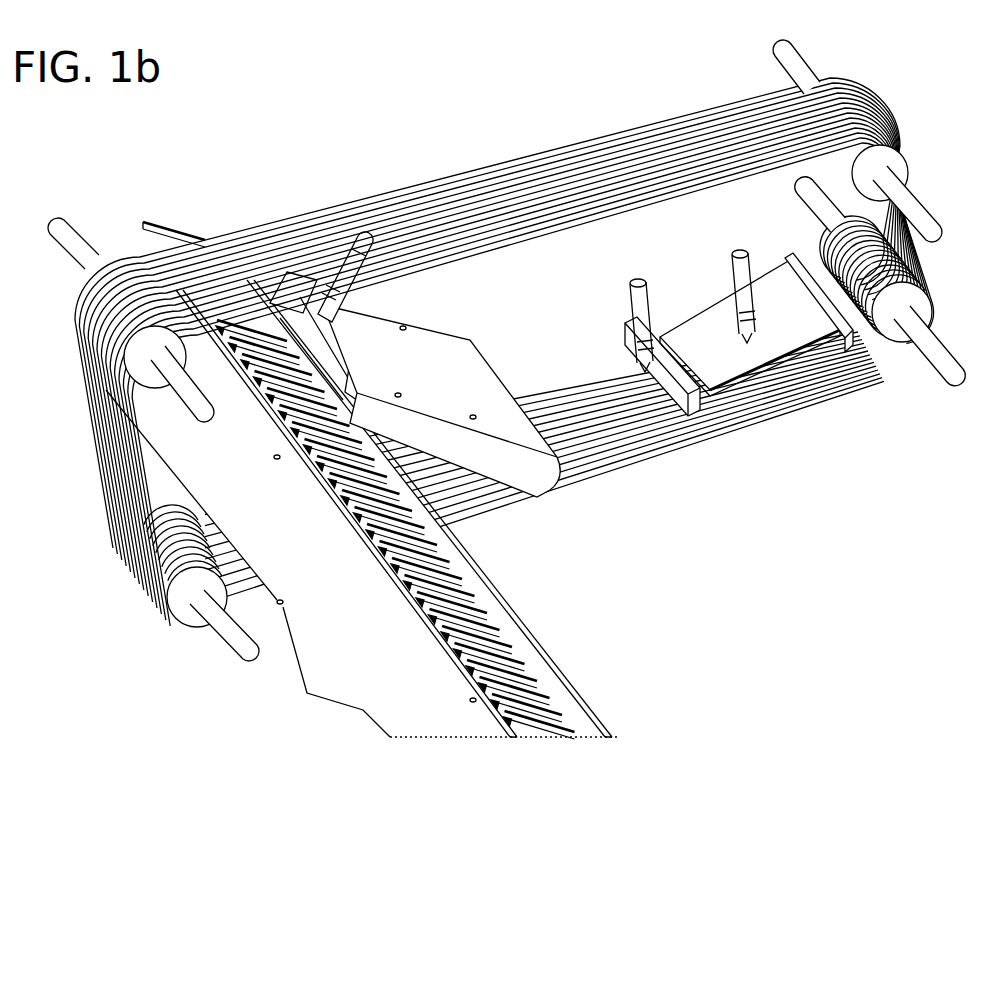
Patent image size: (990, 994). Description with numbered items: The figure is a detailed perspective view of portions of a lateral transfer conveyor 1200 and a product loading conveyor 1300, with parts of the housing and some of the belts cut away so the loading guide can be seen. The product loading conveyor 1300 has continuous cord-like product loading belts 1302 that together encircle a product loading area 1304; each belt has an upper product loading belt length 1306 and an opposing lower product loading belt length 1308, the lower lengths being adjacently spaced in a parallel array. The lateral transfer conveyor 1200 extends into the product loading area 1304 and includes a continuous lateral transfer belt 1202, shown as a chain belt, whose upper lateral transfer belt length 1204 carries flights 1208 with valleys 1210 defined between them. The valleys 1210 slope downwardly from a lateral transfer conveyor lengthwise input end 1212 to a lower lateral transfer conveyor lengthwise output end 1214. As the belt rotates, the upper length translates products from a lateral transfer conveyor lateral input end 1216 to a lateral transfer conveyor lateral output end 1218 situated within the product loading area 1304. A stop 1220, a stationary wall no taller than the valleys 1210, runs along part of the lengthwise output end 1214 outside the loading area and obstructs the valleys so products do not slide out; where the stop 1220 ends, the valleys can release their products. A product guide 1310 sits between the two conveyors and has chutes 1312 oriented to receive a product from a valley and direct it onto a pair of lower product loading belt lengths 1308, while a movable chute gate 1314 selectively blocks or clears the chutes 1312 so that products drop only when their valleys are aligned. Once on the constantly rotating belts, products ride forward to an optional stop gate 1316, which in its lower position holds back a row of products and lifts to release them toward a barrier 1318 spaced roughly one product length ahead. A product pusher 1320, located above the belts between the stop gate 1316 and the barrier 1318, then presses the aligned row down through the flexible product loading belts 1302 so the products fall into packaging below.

The lateral transfer conveyor 1200 is at (427, 627).
The lateral transfer belt 1202 is at (483, 618).
The upper lateral transfer belt length 1204 is at (520, 640).
The flights 1208 is at (510, 620).
The valleys 1210 is at (500, 613).
The lateral transfer conveyor lengthwise input end 1212 is at (400, 547).
The lateral transfer conveyor lengthwise output end 1214 is at (467, 540).
The lateral transfer conveyor lateral input end 1216 is at (577, 733).
The lateral transfer conveyor lateral output end 1218 is at (227, 367).
The stop 1220 is at (497, 580).
The product loading conveyor 1300 is at (432, 178).
The product loading belts 1302 is at (482, 195).
The product loading area 1304 is at (547, 287).
The upper product loading belt lengths 1306 is at (637, 163).
The lower product loading belt lengths 1308 is at (620, 427).
The product guide 1310 is at (430, 353).
The chutes 1312 is at (330, 330).
The chute gate 1314 is at (318, 312).
The stop gate 1316 is at (672, 392).
The barrier 1318 is at (845, 325).
The product pusher 1320 is at (773, 337).